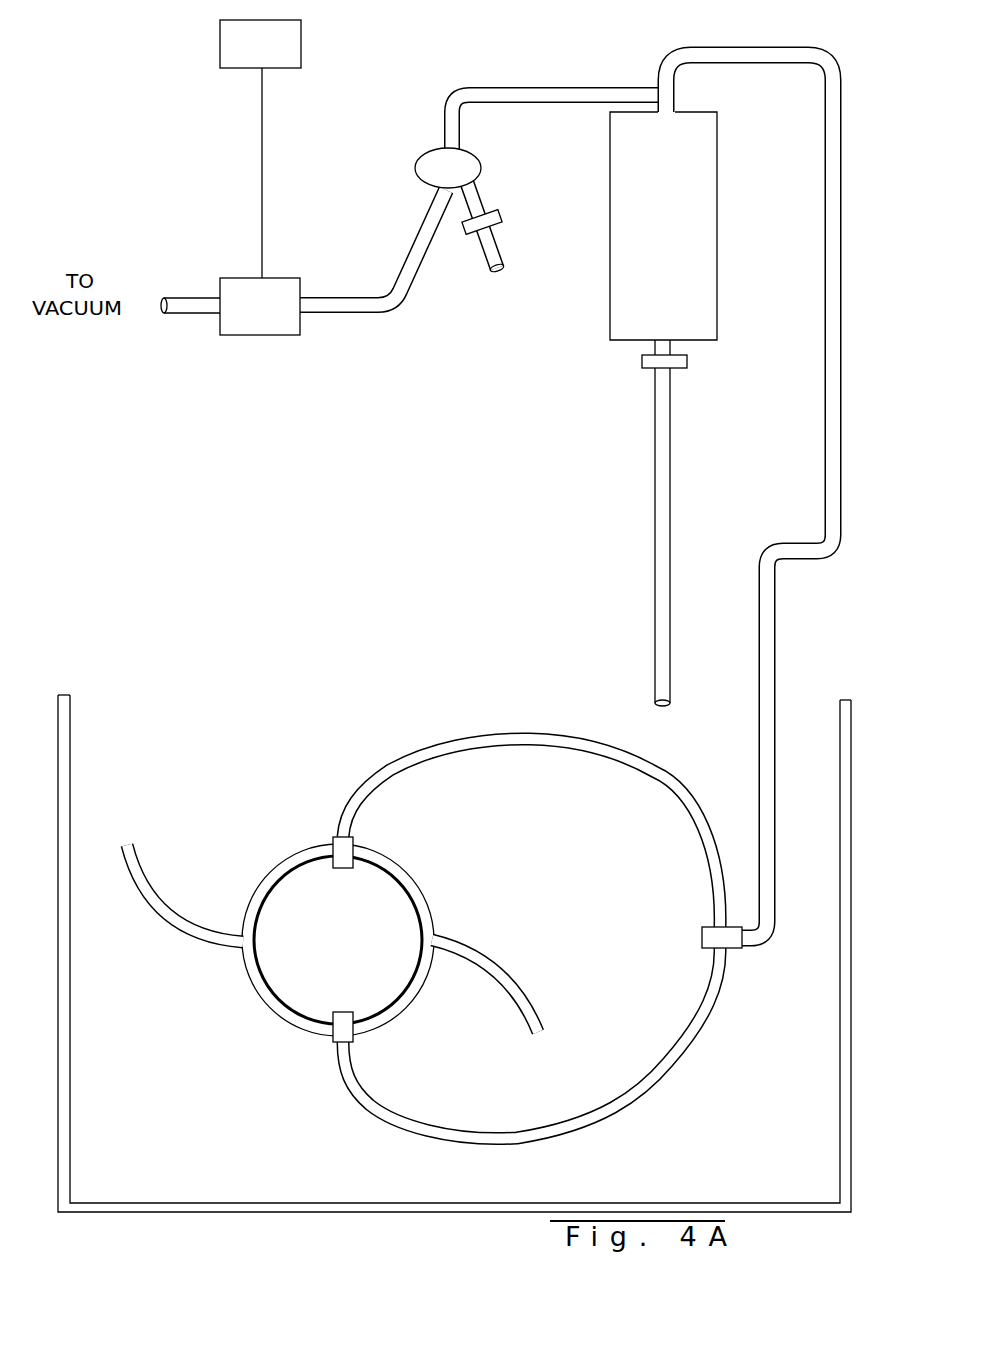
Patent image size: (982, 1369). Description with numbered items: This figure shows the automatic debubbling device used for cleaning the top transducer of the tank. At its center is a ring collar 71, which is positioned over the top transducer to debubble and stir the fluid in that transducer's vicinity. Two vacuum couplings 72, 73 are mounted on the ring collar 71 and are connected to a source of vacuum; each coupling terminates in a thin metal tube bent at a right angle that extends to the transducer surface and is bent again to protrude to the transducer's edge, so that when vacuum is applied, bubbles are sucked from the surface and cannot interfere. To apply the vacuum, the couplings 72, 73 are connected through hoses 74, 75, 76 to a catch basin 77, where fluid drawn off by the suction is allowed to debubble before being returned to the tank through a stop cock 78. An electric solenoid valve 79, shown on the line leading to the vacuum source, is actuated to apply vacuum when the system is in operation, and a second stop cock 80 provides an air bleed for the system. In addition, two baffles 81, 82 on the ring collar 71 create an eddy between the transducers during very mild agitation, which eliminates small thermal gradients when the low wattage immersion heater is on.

The ring collar 71 is at (419, 884).
The vacuum coupling 72 is at (340, 1010).
The vacuum coupling 73 is at (345, 870).
The hose 74 is at (587, 752).
The hose 75 is at (691, 1031).
The hose 76 is at (759, 737).
The catch basin 77 is at (708, 258).
The stop cock 78 is at (642, 362).
The electric solenoid valve 79 is at (281, 290).
The stop cock 80 is at (497, 213).
The baffle 81 is at (518, 990).
The baffle 82 is at (170, 905).